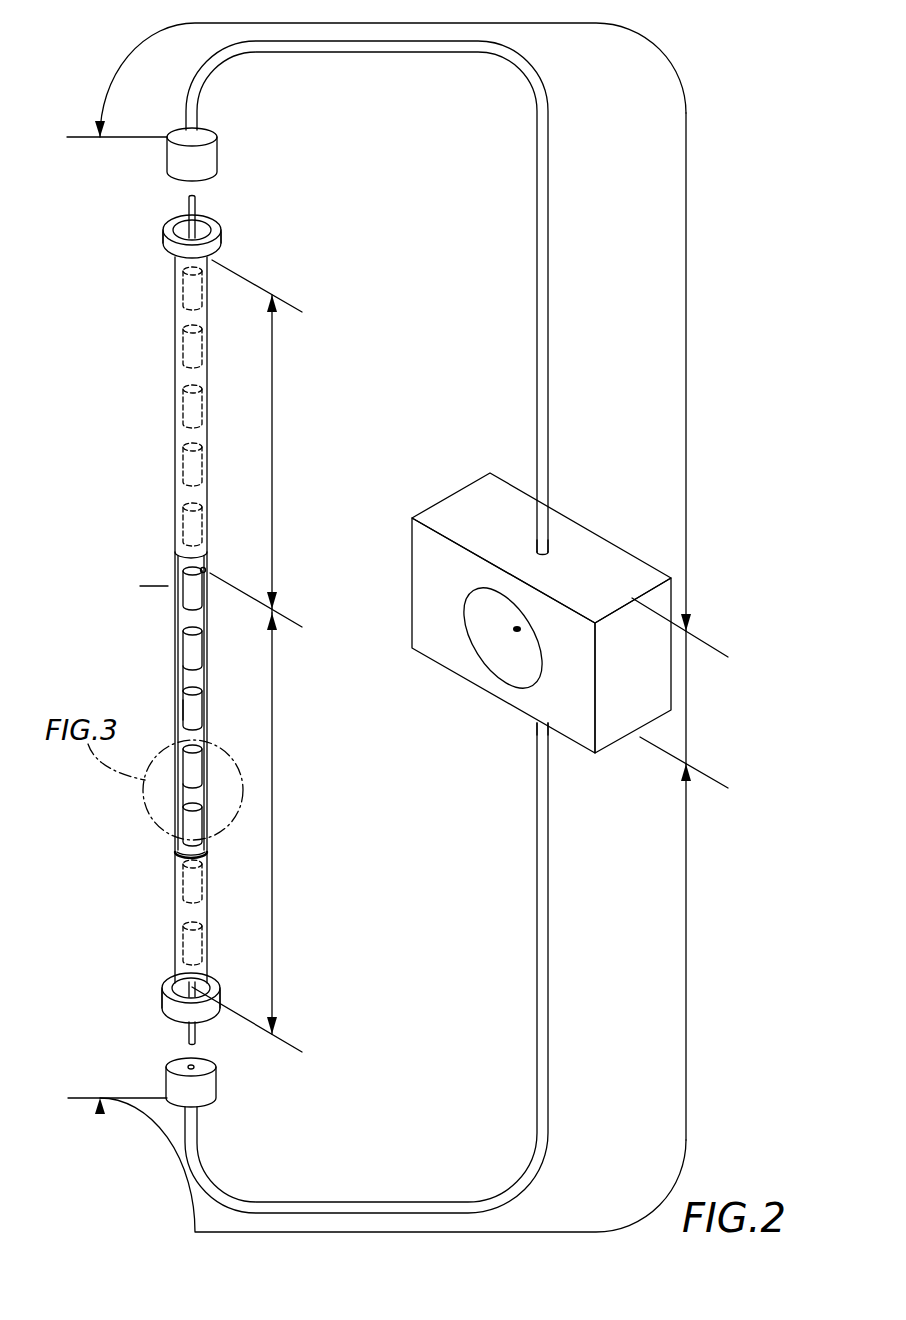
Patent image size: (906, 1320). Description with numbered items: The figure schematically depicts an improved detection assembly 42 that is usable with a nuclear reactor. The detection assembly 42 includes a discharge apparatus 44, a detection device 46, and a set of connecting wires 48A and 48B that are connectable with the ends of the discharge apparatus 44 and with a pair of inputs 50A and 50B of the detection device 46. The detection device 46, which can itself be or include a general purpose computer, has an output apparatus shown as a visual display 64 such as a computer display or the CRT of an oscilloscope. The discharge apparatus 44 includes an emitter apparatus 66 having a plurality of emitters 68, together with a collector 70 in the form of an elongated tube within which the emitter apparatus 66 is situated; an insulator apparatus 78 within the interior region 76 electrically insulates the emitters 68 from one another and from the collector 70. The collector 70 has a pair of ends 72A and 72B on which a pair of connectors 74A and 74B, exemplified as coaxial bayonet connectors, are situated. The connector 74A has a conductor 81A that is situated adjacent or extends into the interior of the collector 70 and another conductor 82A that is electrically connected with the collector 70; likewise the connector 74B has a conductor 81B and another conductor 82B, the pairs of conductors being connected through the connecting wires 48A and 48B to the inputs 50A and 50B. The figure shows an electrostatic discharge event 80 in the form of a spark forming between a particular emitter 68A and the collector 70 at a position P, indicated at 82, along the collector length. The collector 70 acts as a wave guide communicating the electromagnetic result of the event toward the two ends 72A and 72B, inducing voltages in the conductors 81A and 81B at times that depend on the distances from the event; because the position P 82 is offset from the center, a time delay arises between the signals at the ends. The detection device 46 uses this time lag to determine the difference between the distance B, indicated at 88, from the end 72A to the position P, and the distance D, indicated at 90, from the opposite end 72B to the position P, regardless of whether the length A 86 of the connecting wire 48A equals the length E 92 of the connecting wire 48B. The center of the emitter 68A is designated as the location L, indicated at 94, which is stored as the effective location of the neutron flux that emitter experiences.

The detection assembly 42 is at (716, 74).
The discharge apparatus 44 is at (157, 395).
The detection device 46 is at (557, 510).
The connecting wire 48A is at (380, 45).
The connecting wire 48B is at (350, 1201).
The input 50A is at (553, 555).
The input 50B is at (543, 727).
The visual display 64 is at (463, 628).
The emitter apparatus 66 is at (163, 696).
The emitters 68 is at (199, 706).
The emitter 68A is at (200, 592).
The collector 70 is at (175, 847).
The end 72A is at (196, 227).
The end 72B is at (190, 987).
The connector 74A is at (222, 240).
The connector 74B is at (175, 1013).
The interior region 76 is at (188, 795).
The insulator apparatus 78 is at (186, 675).
The electrostatic discharge event 80 is at (206, 570).
The conductor 81A is at (188, 198).
The conductor 81B is at (197, 1035).
The position P 82 is at (303, 655).
The conductor 82A is at (165, 240).
The conductor 82B is at (222, 993).
The length A 86 is at (686, 306).
The distance B 88 is at (272, 434).
The distance D 90 is at (272, 843).
The length E 92 is at (686, 908).
The location L 94 is at (137, 606).